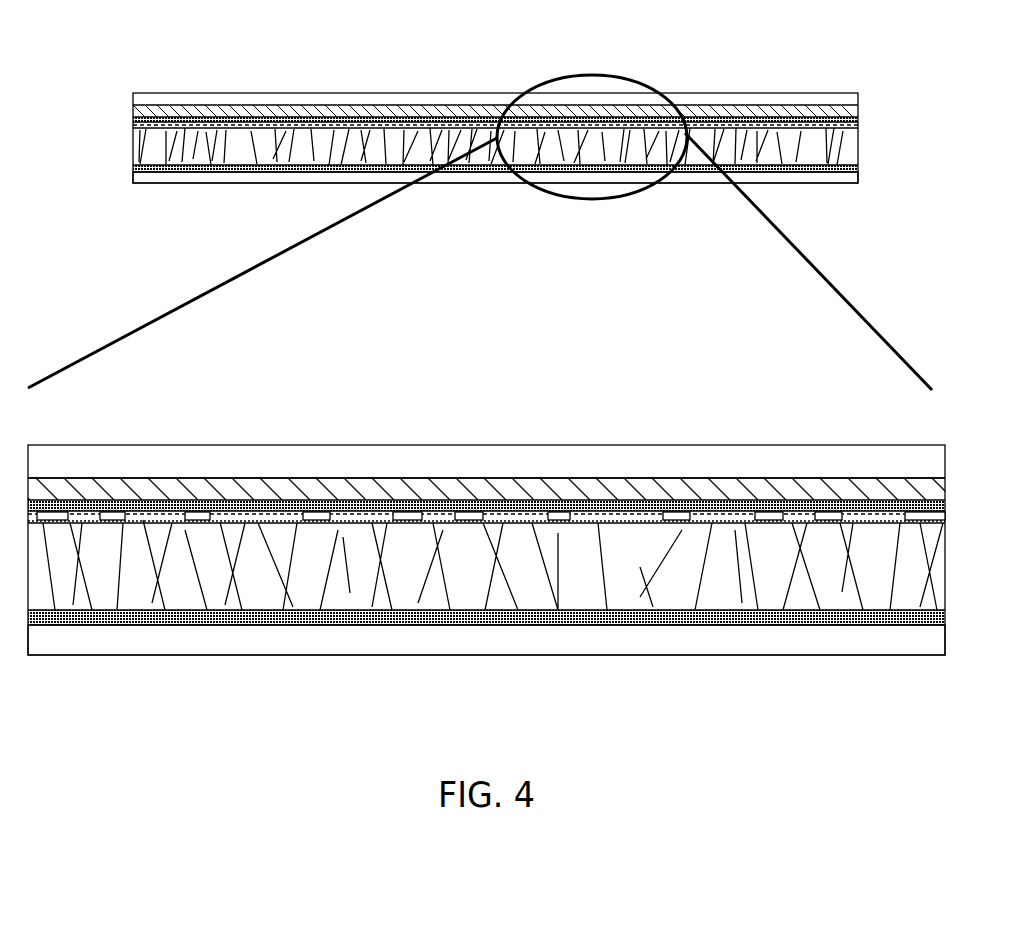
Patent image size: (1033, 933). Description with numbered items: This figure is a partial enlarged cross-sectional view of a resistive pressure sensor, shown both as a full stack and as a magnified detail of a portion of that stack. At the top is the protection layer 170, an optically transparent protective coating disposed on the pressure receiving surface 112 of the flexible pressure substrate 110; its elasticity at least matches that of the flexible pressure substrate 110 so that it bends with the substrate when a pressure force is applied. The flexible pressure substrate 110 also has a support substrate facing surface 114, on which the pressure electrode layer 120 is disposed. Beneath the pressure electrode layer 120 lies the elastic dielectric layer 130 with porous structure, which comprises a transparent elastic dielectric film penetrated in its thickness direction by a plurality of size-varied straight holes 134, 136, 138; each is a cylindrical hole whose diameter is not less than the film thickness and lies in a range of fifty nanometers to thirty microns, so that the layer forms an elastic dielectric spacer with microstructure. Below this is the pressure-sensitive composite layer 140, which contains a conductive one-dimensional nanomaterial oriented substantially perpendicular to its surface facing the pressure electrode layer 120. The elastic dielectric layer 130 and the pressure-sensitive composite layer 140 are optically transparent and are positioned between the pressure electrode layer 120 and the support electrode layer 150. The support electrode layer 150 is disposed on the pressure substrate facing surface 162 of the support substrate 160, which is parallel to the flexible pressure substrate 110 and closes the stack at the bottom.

The flexible pressure substrate 110 is at (153, 110).
The pressure receiving surface 112 is at (82, 477).
The support substrate facing surface 114 is at (133, 497).
The pressure electrode layer 120 is at (133, 118).
The elastic dielectric layer 130 is at (298, 127).
The size-varied straight hole 134 is at (607, 517).
The size-varied straight hole 136 is at (715, 512).
The size-varied straight hole 138 is at (797, 513).
The pressure-sensitive composite layer 140 is at (133, 147).
The support electrode layer 150 is at (173, 170).
The support substrate 160 is at (253, 175).
The pressure substrate facing surface 162 is at (392, 625).
The protection layer 170 is at (462, 98).